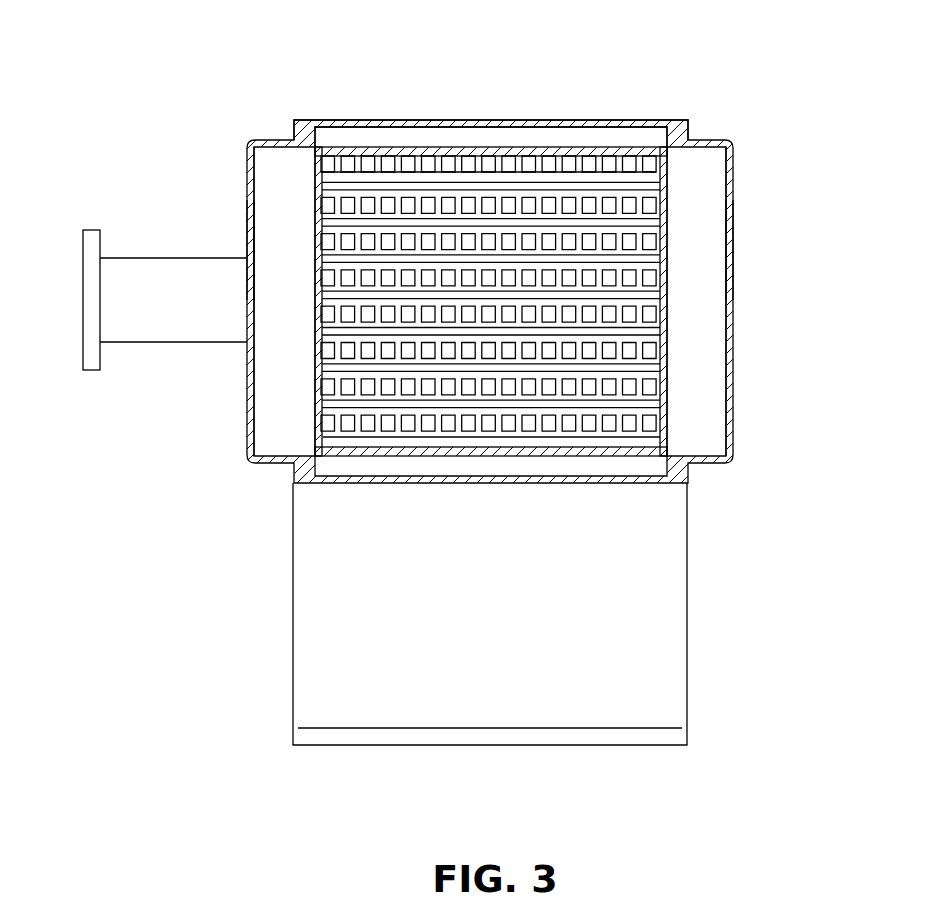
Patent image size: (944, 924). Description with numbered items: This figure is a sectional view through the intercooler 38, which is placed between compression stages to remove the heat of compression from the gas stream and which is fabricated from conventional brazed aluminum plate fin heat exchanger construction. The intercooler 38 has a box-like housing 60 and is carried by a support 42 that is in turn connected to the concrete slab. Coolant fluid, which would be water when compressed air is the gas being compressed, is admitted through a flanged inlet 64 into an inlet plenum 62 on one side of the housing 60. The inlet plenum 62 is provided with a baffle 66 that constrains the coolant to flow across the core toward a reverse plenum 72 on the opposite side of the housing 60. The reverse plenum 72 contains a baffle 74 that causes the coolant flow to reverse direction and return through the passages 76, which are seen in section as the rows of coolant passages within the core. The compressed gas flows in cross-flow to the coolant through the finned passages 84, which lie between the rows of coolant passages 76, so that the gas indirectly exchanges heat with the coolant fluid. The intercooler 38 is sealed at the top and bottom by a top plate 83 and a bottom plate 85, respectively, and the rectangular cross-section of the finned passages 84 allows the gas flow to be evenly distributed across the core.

The intercooler 38 is at (717, 76).
The support 42 is at (318, 665).
The box-like housing 60 is at (213, 90).
The inlet plenum 62 is at (243, 195).
The flanged inlet 64 is at (148, 322).
The baffle 66 is at (285, 403).
The reverse plenum 72 is at (737, 198).
The baffle 74 is at (695, 348).
The passages 76 is at (458, 222).
The top plate 83 is at (478, 147).
The finned passages 84 is at (570, 275).
The bottom plate 85 is at (615, 460).